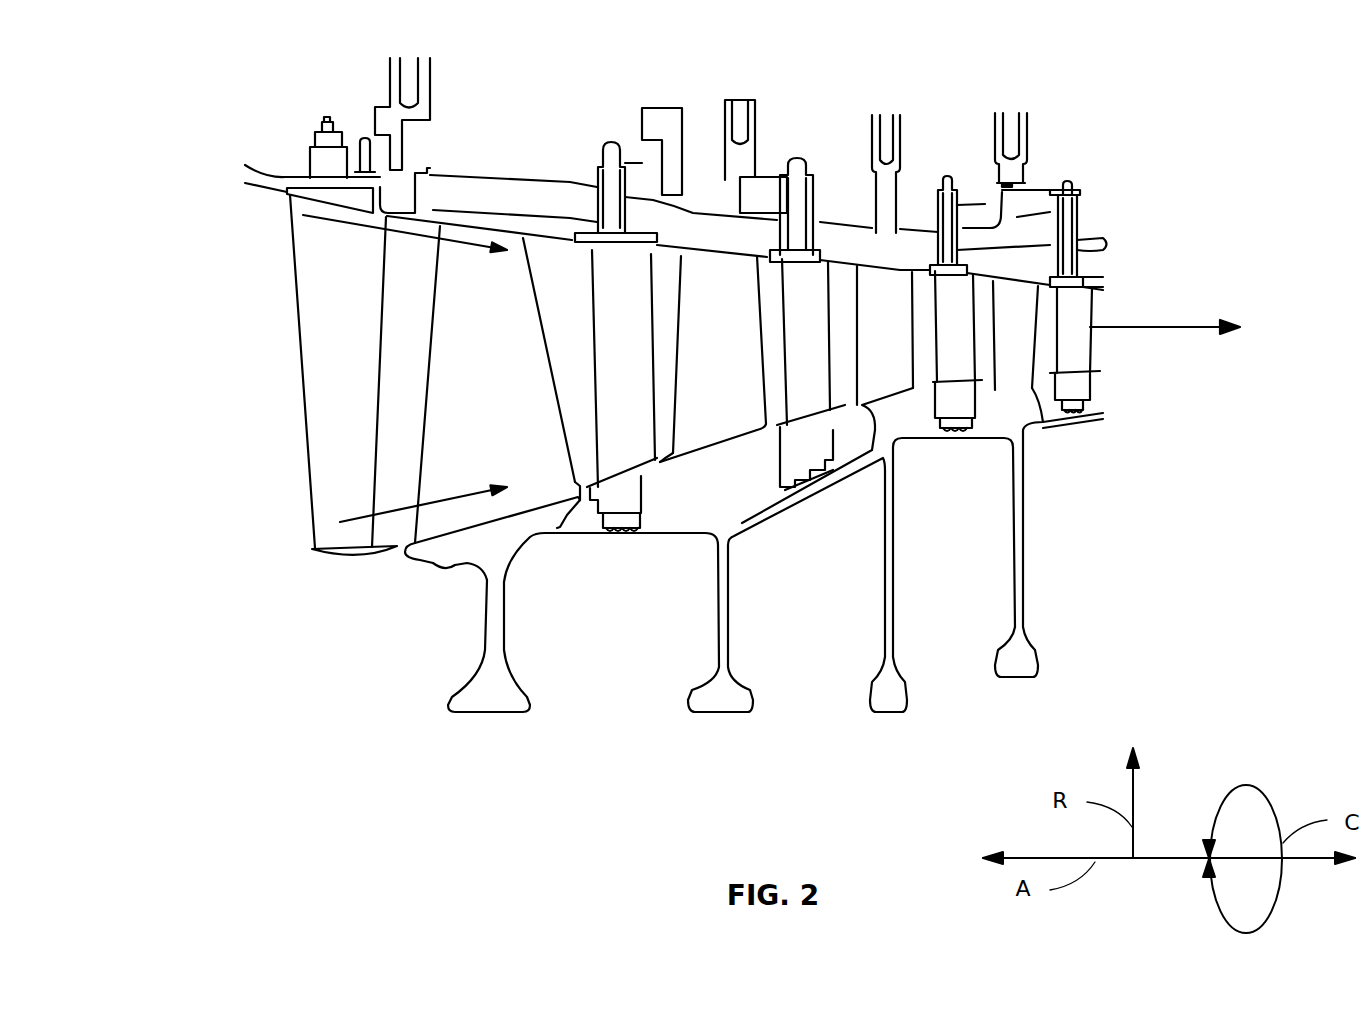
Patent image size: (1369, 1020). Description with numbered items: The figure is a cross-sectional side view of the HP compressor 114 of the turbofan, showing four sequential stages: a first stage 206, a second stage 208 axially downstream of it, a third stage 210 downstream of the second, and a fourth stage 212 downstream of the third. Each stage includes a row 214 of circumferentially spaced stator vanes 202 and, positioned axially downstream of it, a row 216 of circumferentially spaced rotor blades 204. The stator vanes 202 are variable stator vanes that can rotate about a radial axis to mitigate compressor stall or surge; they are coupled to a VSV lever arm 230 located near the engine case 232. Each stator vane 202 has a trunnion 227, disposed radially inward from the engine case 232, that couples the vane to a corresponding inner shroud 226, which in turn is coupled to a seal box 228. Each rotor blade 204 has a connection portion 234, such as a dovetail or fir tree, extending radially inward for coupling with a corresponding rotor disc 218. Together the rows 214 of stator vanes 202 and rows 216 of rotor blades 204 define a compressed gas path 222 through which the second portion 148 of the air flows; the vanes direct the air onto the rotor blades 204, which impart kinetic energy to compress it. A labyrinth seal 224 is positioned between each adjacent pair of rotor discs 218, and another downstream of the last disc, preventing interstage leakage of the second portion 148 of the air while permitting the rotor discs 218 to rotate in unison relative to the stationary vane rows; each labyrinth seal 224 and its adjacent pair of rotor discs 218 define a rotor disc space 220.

The HP compressor 114 is at (132, 138).
The second portion of the air 148 is at (433, 500).
The stator vane 202 is at (320, 357).
The rotor blade 204 is at (470, 302).
The first stage 206 is at (455, 155).
The second stage 208 is at (698, 180).
The third stage 210 is at (842, 190).
The fourth stage 212 is at (993, 193).
The row of stator vanes 214 is at (297, 317).
The row of rotor blades 216 is at (437, 288).
The rotor disc 218 is at (508, 657).
The rotor disc space 220 is at (612, 645).
The compressed gas path 222 is at (303, 215).
The labyrinth seal 224 is at (667, 535).
The inner shroud 226 is at (980, 380).
The trunnion 227 is at (797, 420).
The seal box 228 is at (663, 500).
The VSV lever arm 230 is at (365, 137).
The engine case 232 is at (1107, 207).
The connection portion 234 is at (483, 530).